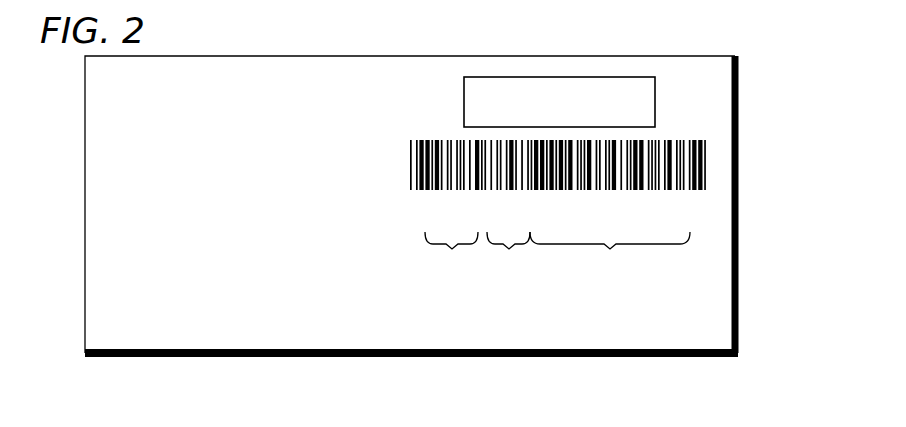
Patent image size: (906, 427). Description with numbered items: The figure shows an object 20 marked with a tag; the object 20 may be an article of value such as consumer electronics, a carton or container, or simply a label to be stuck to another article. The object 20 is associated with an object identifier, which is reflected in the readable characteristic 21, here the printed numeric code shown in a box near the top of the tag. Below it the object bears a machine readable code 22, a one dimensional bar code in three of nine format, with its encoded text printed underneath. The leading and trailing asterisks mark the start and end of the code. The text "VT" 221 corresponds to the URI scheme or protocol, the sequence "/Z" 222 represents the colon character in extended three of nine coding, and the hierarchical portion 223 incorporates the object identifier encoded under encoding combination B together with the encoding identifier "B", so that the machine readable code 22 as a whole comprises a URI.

The object 20 is at (118, 357).
The readable characteristic 21 is at (636, 104).
The machine readable code 22 is at (715, 163).
The URI scheme 221 is at (452, 248).
The colon character sequence 222 is at (509, 248).
The hierarchical portion 223 is at (610, 248).